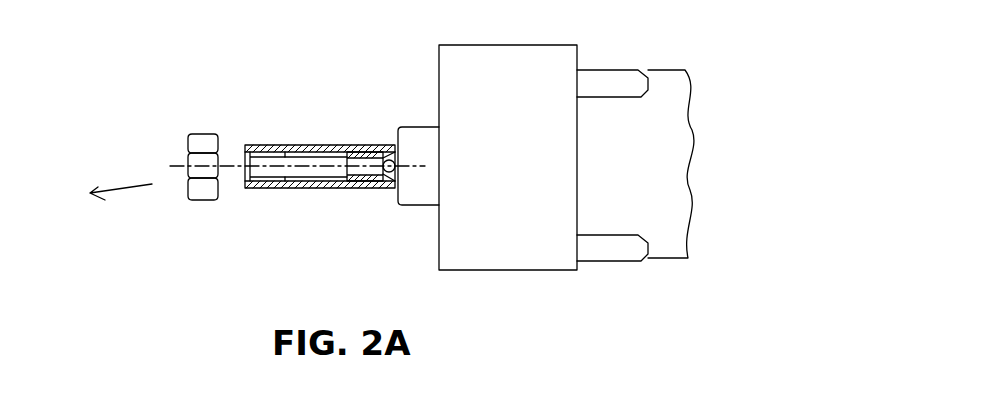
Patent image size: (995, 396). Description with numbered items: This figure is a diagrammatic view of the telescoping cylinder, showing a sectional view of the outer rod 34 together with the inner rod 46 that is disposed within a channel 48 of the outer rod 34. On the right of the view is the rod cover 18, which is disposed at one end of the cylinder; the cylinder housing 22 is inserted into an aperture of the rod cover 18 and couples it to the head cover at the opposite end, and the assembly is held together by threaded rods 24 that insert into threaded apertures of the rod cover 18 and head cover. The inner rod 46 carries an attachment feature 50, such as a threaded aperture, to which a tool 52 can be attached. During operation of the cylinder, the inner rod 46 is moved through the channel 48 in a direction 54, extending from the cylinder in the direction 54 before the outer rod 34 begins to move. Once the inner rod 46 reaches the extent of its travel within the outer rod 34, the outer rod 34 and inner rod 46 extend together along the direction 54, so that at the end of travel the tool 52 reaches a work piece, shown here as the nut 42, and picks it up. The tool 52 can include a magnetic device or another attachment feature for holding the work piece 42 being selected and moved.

The rod cover 18 is at (508, 67).
The cylinder housing 22 is at (663, 95).
The threaded rods 24 is at (603, 90).
The outer rod 34 is at (295, 145).
The nut 42 is at (198, 140).
The inner rod 46 is at (383, 177).
The channel 48 is at (247, 157).
The attachment feature 50 is at (382, 145).
The tool 52 is at (285, 150).
The direction 54 is at (122, 213).